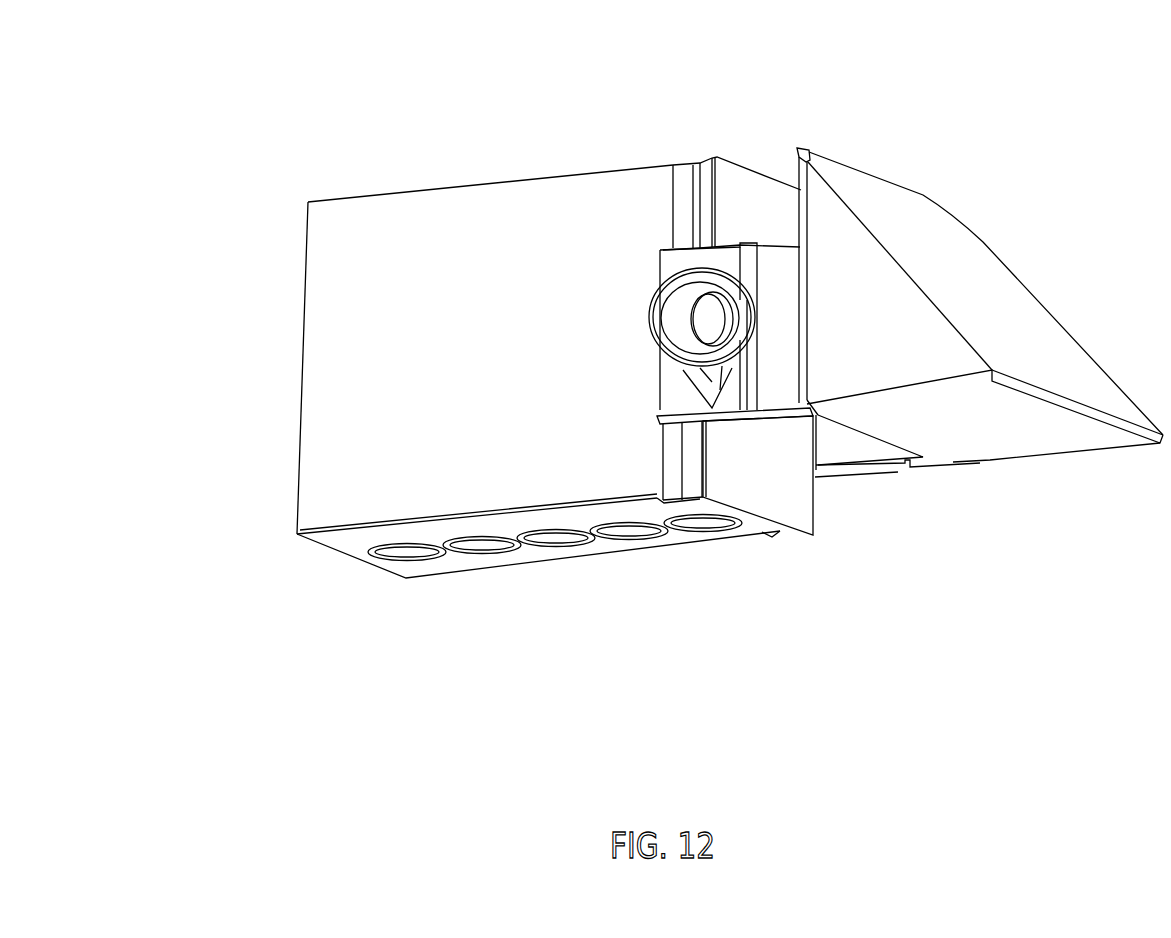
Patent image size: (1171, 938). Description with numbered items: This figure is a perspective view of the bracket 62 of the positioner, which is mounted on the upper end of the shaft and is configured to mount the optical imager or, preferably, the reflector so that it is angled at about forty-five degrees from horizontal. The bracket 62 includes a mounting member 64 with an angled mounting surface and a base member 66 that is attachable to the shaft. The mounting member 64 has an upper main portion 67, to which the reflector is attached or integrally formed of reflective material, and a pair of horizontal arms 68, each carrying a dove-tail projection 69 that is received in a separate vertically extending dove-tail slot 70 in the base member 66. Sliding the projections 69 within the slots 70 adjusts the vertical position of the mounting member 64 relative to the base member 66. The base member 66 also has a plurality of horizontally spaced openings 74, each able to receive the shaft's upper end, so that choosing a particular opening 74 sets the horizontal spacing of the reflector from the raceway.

The bracket 62 is at (354, 70).
The mounting member 64 is at (1019, 239).
The base member 66 is at (292, 361).
The upper main portion 67 is at (1021, 447).
The horizontal arms 68 is at (670, 246).
The dove-tail projection 69 is at (686, 425).
The dove-tail slot 70 is at (696, 185).
The openings 74 is at (405, 553).